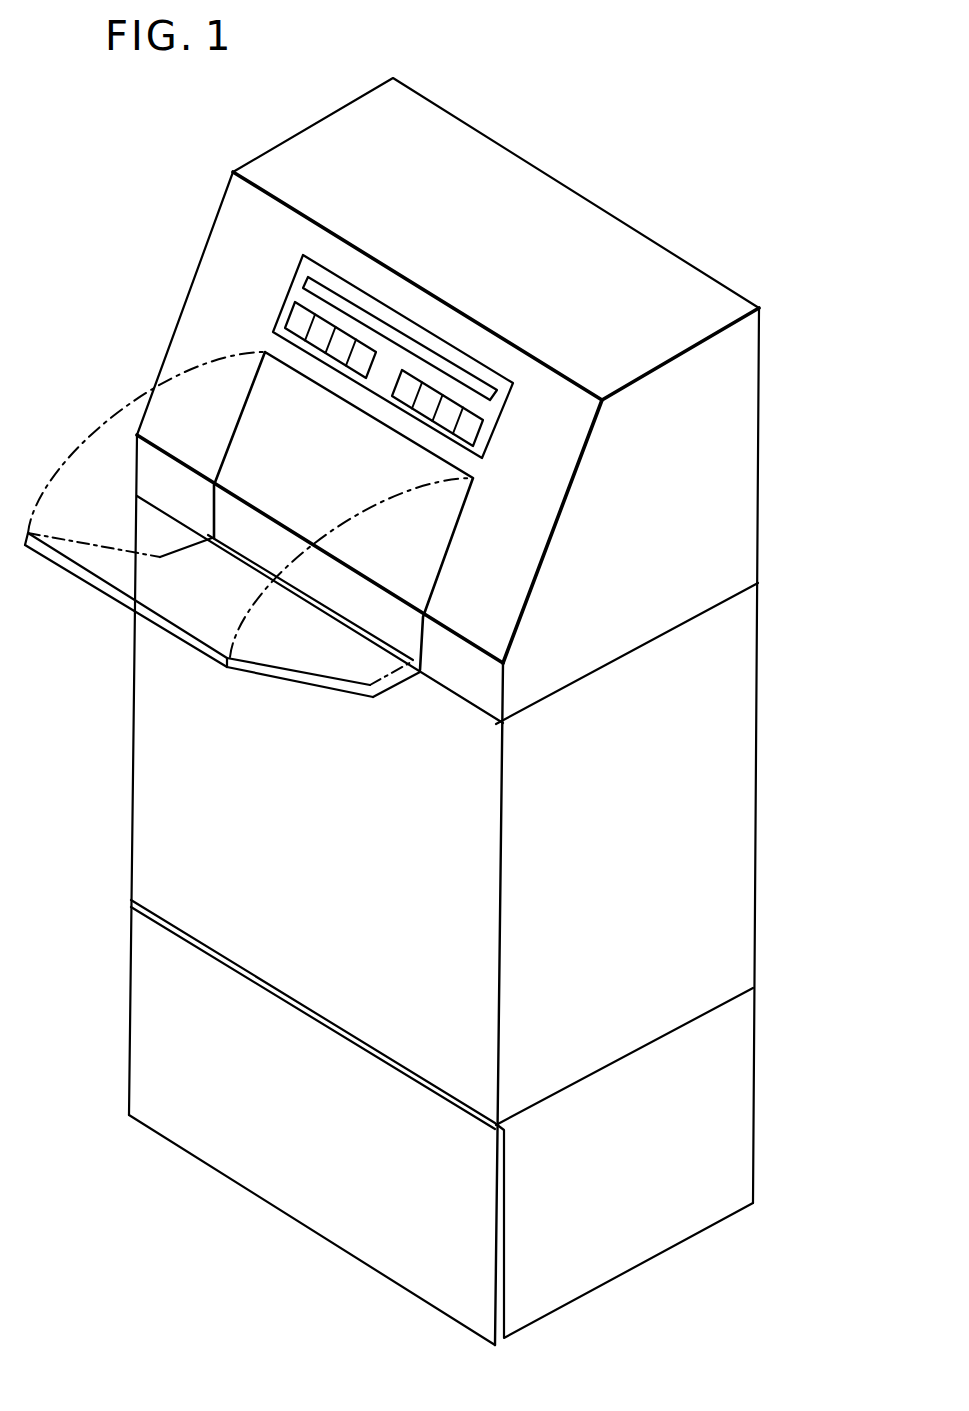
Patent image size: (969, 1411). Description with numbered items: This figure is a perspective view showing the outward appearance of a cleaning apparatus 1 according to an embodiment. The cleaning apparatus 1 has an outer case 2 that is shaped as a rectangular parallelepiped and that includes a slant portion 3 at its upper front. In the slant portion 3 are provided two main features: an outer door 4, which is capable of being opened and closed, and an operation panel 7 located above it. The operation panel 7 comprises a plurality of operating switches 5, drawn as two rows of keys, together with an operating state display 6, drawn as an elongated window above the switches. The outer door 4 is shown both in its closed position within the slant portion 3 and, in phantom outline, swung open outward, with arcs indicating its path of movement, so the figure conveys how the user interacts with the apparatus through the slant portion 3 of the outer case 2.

The cleaning apparatus 1 is at (779, 626).
The outer case 2 is at (740, 755).
The slant portion 3 is at (565, 450).
The outer door 4 is at (423, 550).
The operating switches 5 is at (332, 347).
The operating state display 6 is at (385, 327).
The operation panel 7 is at (470, 356).